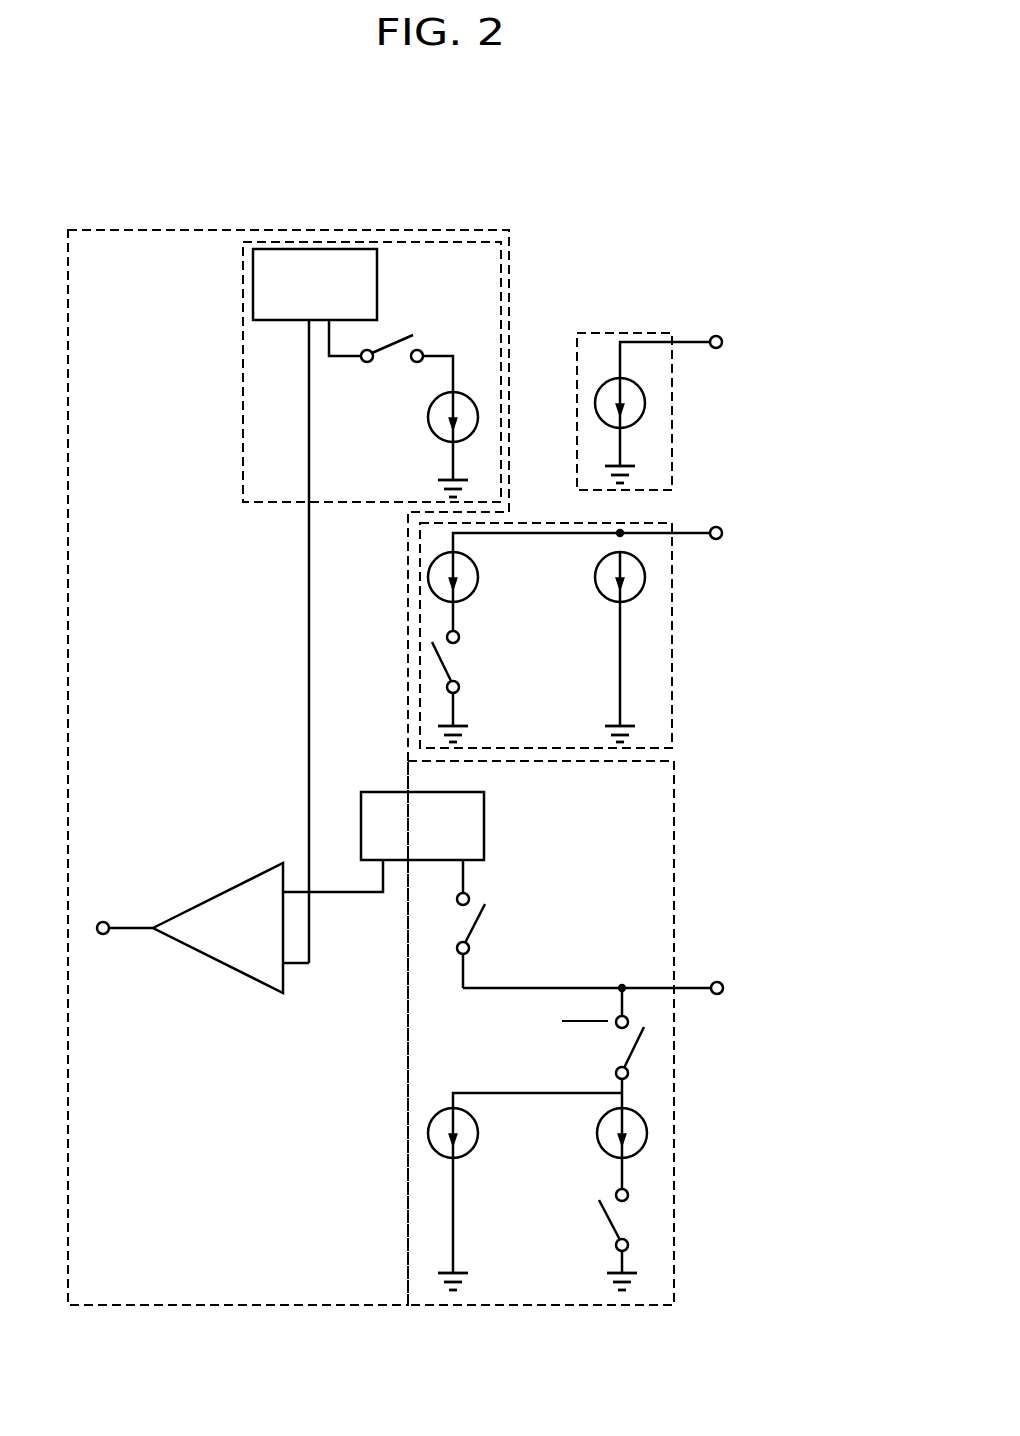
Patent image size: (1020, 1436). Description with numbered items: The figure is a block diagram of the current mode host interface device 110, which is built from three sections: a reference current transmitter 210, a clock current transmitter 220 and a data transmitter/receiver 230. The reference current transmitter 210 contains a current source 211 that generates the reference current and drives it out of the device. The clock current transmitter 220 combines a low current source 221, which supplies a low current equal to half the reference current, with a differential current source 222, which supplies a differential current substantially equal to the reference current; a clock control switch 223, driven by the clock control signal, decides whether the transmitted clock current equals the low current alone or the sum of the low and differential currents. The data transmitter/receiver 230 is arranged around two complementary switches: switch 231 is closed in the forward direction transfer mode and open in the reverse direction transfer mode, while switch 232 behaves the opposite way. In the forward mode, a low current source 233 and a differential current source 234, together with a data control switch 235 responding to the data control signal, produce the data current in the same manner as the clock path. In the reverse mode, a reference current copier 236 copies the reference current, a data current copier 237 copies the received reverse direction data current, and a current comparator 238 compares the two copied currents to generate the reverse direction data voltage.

The current mode host interface device 110 is at (448, 206).
The reference current transmitter 210 is at (667, 410).
The current source 211 is at (645, 403).
The clock current transmitter 220 is at (549, 634).
The low current source 221 is at (595, 577).
The differential current source 222 is at (428, 577).
The clock control switch 223 is at (440, 657).
The data transmitter/receiver 230 is at (674, 873).
The switch 231 is at (633, 1045).
The switch 232 is at (472, 925).
The low current source 233 is at (428, 1133).
The differential current source 234 is at (597, 1133).
The data control switch 235 is at (612, 1215).
The reference current copier 236 is at (243, 373).
The data current copier 237 is at (484, 824).
The current comparator 238 is at (215, 960).